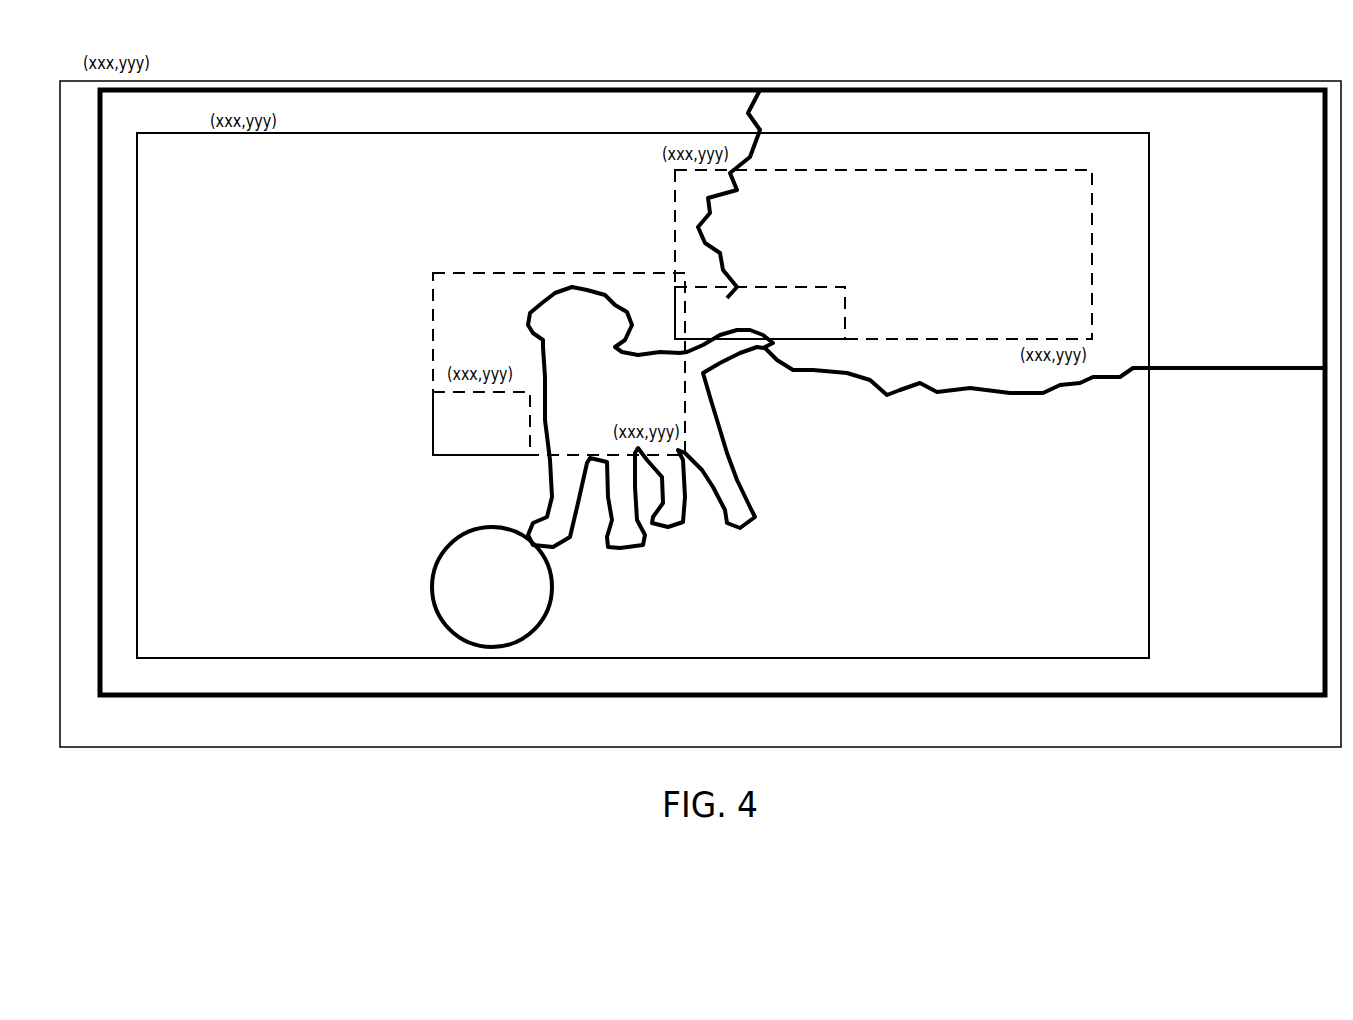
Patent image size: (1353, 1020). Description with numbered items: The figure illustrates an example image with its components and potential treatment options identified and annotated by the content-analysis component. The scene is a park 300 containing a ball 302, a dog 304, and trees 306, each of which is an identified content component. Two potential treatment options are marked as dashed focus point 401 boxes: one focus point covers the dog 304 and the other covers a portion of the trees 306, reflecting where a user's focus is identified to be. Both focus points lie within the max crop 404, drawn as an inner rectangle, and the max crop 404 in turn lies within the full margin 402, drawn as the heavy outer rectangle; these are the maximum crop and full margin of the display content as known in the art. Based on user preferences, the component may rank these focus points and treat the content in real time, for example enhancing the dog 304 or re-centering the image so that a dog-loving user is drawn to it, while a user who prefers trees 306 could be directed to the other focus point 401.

The park 300 is at (1221, 651).
The ball 302 is at (542, 587).
The dog 304 is at (710, 420).
The trees 306 is at (1266, 202).
The focus point 401 is at (898, 311).
The full margin 402 is at (133, 696).
The max crop 404 is at (163, 657).